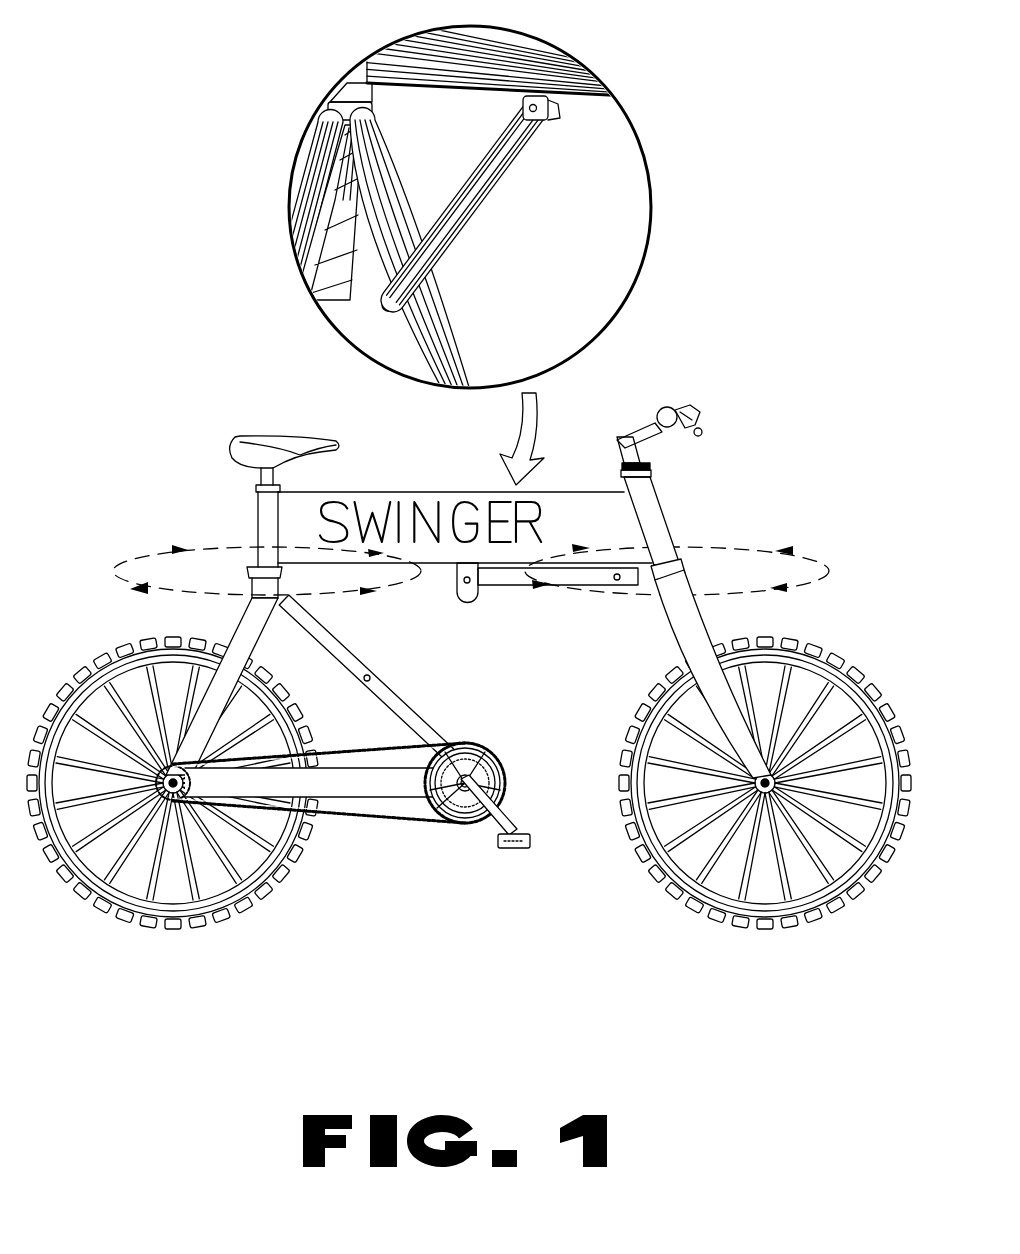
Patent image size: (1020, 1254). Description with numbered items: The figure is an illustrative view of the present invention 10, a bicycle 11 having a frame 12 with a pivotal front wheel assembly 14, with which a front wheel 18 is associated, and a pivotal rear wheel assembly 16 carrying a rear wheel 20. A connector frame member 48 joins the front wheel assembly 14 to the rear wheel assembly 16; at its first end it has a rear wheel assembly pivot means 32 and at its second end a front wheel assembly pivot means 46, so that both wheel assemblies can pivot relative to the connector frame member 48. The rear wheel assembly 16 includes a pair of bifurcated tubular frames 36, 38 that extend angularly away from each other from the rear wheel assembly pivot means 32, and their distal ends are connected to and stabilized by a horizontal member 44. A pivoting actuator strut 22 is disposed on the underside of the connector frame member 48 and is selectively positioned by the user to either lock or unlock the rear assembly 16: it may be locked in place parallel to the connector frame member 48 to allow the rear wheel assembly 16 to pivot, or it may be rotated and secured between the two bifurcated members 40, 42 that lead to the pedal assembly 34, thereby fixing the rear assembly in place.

The present invention 10 is at (695, 250).
The bicycle 11 is at (628, 396).
The frame 12 is at (380, 470).
The pivotal front wheel assembly 14 is at (695, 512).
The pivotal rear wheel assembly 16 is at (232, 505).
The front wheel 18 is at (820, 650).
The rear wheel 20 is at (235, 908).
The pivoting actuator strut 22 is at (498, 187).
The rear wheel assembly pivot means 32 is at (252, 568).
The pedal assembly 34 is at (513, 750).
The bifurcated tubular frame 36 is at (385, 693).
The bifurcated tubular frame 38 is at (233, 635).
The bifurcated member 40 is at (383, 272).
The bifurcated member 42 is at (393, 193).
The horizontal member 44 is at (387, 800).
The front wheel assembly pivot means 46 is at (650, 580).
The connector frame member 48 is at (462, 492).